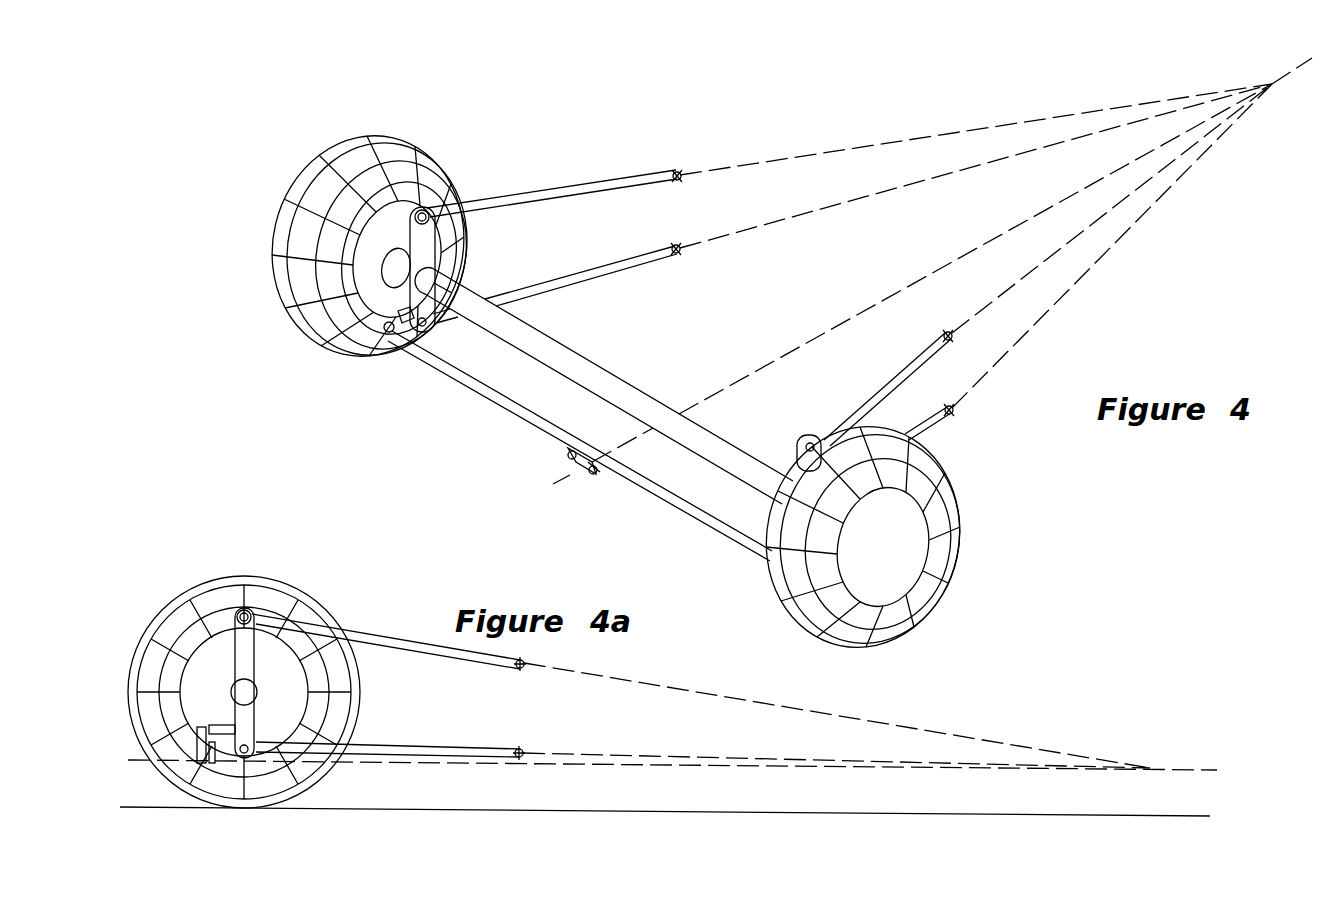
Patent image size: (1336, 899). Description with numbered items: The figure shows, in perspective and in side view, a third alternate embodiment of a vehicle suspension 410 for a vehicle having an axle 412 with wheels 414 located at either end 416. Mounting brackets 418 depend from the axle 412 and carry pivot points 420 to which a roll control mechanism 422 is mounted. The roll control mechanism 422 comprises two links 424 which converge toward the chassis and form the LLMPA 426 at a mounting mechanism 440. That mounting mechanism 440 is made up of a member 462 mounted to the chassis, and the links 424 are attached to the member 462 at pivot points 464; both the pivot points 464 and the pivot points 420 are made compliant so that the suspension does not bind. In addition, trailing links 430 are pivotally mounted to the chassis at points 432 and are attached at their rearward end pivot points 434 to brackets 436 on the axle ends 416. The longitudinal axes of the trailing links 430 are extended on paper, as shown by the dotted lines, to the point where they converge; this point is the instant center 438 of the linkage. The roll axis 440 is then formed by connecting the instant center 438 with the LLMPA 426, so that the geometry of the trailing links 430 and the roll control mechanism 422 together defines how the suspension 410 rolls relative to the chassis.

In FIG. 4, the suspension 410 is at (1062, 346).
In FIG. 4A, the suspension 410 is at (357, 598).
In FIG. 4, the axle 412 is at (597, 373).
In FIG. 4A, the axle 412 is at (246, 694).
In FIG. 4, the wheels 414 is at (403, 152).
In FIG. 4A, the wheels 414 is at (226, 597).
In FIG. 4, the axle end 416 is at (399, 262).
In FIG. 4, the mounting bracket 418 is at (398, 318).
In FIG. 4, the pivot point 420 is at (389, 335).
In FIG. 4A, the pivot point 420 is at (216, 744).
In FIG. 4, the roll control mechanism 422 is at (443, 465).
In FIG. 4, the link 424 is at (428, 357).
In FIG. 4, the LLMPA 426 is at (598, 466).
In FIG. 4, the trailing link 430 is at (535, 290).
In FIG. 4A, the trailing link 430 is at (389, 687).
In FIG. 4, the pivot point 432 is at (672, 246).
In FIG. 4, the rearward end pivot point 434 is at (440, 221).
In FIG. 4A, the rearward end pivot point 434 is at (250, 612).
In FIG. 4, the bracket 436 is at (430, 244).
In FIG. 4A, the bracket 436 is at (245, 648).
In FIG. 4, the instant center 438 is at (1266, 81).
In FIG. 4A, the instant center 438 is at (1163, 766).
In FIG. 4, the roll axis / mounting mechanism 440 is at (564, 489).
In FIG. 4A, the roll axis / mounting mechanism 440 is at (690, 766).
In FIG. 4, the member 462 is at (583, 452).
In FIG. 4, the pivot point 464 is at (567, 456).